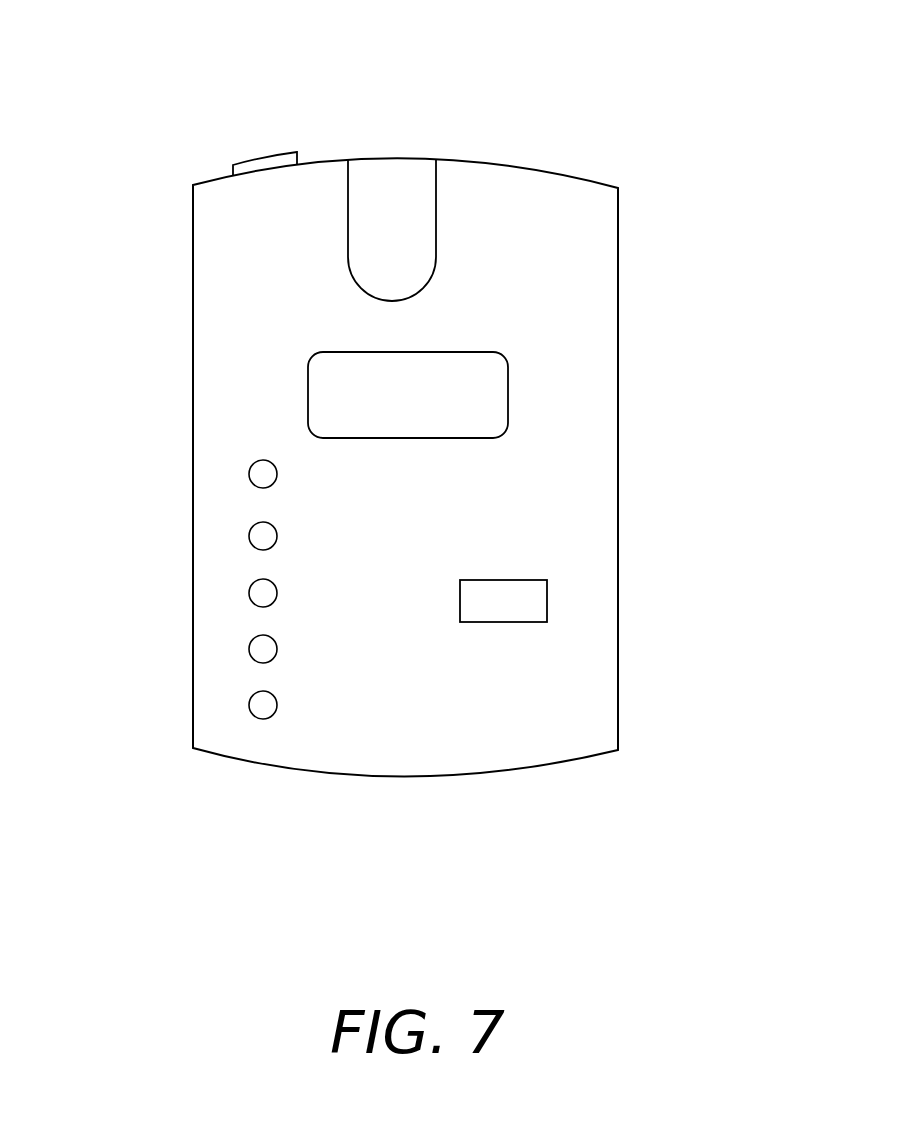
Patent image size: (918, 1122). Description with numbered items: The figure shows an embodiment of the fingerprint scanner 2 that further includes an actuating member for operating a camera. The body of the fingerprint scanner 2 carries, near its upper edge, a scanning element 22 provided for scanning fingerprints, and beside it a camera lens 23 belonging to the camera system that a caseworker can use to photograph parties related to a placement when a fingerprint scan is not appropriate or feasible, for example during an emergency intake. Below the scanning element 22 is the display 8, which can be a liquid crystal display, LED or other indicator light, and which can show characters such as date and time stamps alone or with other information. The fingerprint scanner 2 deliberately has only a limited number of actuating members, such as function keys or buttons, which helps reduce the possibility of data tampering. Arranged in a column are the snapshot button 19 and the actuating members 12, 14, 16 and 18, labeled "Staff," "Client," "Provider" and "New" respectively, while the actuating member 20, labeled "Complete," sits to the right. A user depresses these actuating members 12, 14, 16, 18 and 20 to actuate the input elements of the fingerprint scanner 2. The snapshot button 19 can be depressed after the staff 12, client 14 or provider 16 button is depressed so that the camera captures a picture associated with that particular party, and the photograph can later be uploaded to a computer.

The fingerprint scanner 2 is at (706, 135).
The display 8 is at (472, 405).
The actuating member 12 is at (249, 537).
The actuating member 14 is at (249, 594).
The actuating member 16 is at (249, 650).
The actuating member 18 is at (249, 703).
The snapshot button 19 is at (249, 474).
The actuating member 20 is at (547, 607).
The scanning element 22 is at (391, 200).
The camera lens 23 is at (263, 150).